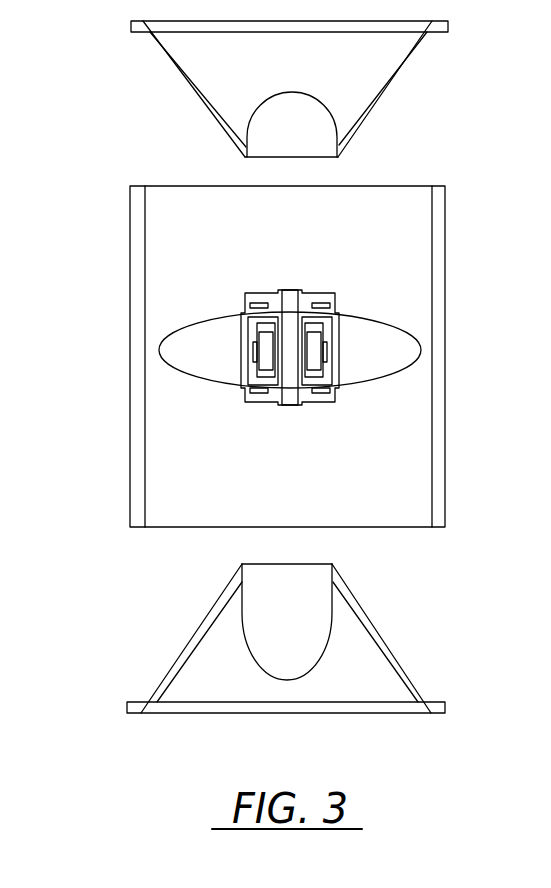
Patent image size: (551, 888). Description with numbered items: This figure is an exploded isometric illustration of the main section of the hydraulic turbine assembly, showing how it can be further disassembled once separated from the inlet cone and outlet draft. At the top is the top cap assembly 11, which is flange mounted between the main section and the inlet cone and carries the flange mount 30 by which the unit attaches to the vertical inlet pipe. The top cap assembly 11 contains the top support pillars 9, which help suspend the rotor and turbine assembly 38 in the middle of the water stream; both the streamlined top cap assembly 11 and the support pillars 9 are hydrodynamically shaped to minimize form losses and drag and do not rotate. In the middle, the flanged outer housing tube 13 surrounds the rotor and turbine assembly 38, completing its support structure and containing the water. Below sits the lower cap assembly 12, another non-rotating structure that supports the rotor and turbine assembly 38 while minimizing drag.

The flange mount 30 is at (0, 84).
The top cap assembly 11 is at (182, 111).
The top support pillars 9 is at (370, 118).
The flanged outer housing tube 13 is at (131, 400).
The rotor and turbine assembly 38 is at (218, 295).
The lower cap assembly 12 is at (110, 677).